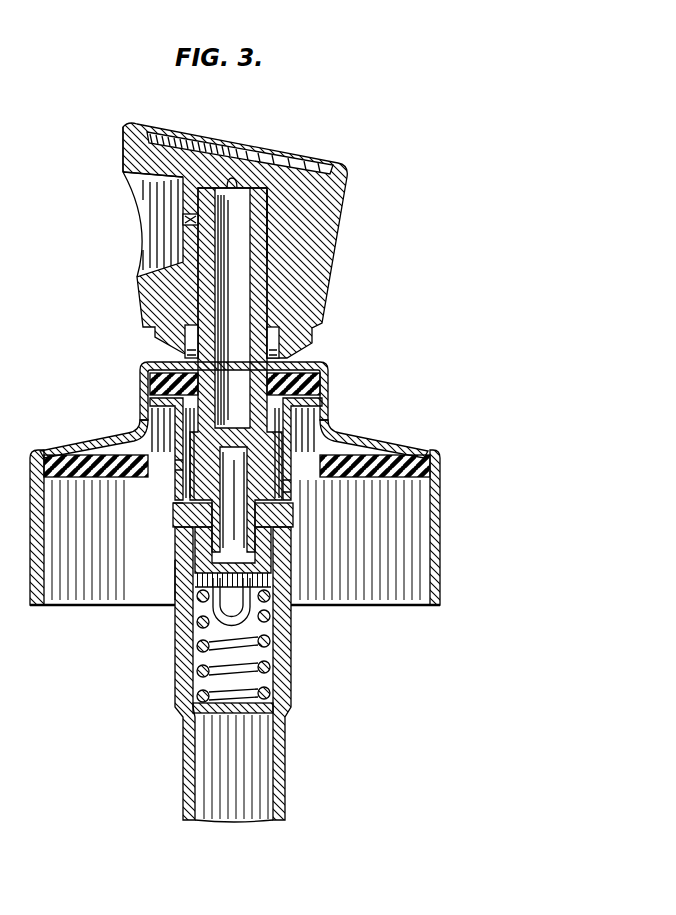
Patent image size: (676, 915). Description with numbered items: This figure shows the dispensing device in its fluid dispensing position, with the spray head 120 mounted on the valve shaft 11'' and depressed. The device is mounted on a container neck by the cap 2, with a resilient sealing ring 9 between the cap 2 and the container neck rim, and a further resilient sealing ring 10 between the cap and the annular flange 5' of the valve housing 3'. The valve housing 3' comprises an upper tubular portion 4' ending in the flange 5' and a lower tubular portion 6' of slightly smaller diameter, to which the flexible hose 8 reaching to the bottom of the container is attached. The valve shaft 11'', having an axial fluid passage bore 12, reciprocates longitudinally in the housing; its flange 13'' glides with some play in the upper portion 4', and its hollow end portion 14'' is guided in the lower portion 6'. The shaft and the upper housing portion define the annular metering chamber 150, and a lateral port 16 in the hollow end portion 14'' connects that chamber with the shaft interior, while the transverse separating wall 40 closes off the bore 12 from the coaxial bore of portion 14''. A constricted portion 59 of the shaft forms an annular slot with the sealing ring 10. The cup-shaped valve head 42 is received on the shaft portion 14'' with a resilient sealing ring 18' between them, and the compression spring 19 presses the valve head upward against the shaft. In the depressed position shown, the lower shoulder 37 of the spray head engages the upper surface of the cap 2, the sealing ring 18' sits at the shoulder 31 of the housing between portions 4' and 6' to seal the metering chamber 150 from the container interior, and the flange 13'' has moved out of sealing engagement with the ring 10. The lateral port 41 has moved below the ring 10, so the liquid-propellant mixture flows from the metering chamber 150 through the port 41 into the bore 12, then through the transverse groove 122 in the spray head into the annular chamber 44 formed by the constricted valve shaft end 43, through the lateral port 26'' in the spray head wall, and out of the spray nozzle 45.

The spray head 120 is at (130, 150).
The transverse groove 122 is at (236, 180).
The valve shaft end 43 is at (272, 182).
The annular chamber 44 is at (270, 215).
The lateral port 26'' is at (147, 213).
The spray nozzle 45 is at (160, 247).
The valve shaft 11'' is at (235, 240).
The axial fluid passage bore 12 is at (222, 283).
The lower shoulder 37 is at (188, 352).
The constricted portion 59 is at (300, 350).
The resilient sealing ring 10 is at (328, 371).
The annular flange 5' is at (257, 384).
The annular metering chamber 150 is at (332, 426).
The resilient sealing ring 9 is at (420, 452).
The lateral port 41 is at (168, 420).
The flange 13'' is at (230, 449).
The transverse separating wall 40 is at (230, 420).
The upper tubular portion 4' is at (156, 480).
The lateral port 16 is at (186, 502).
The cap 2 is at (440, 530).
The shoulder 31 is at (294, 513).
The hollow end portion 14'' is at (307, 490).
The resilient sealing ring 18' is at (262, 550).
The lower tubular portion 6' is at (156, 573).
The valve head 42 is at (282, 566).
The valve housing 3' is at (247, 673).
The compression spring 19 is at (196, 681).
The flexible hose 8 is at (286, 758).